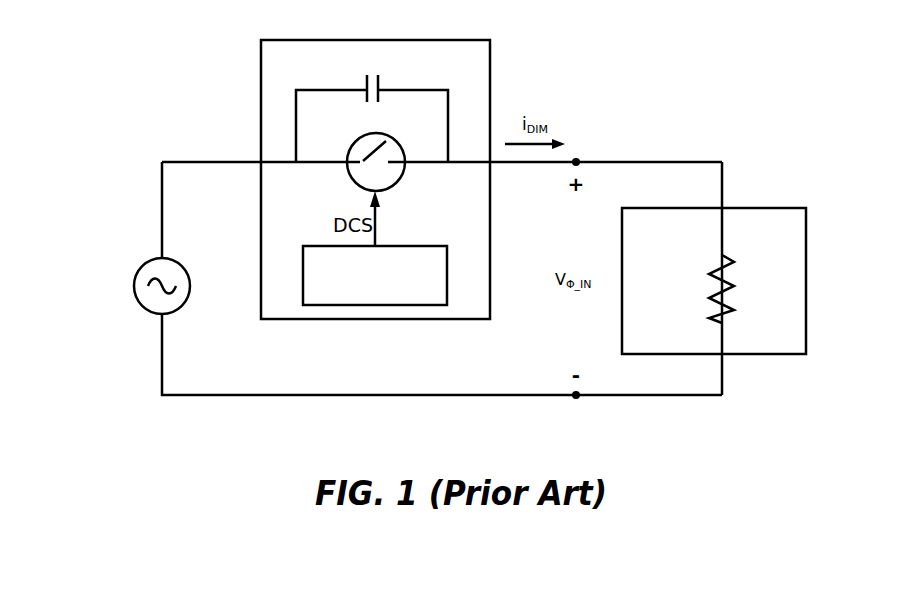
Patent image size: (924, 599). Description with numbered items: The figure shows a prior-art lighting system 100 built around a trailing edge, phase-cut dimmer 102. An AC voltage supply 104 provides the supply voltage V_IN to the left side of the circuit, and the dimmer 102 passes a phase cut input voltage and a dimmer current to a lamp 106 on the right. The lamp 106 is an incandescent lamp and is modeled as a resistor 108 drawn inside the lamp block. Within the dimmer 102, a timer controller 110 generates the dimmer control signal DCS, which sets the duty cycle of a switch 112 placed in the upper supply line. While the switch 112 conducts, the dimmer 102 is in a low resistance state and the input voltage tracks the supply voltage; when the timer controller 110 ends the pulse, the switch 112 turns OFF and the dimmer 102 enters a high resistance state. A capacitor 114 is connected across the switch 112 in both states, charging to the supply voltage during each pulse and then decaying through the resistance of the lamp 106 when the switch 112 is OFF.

The lighting system 100 is at (861, 156).
The trailing edge, phase-cut dimmer 102 is at (490, 100).
The voltage supply 104 is at (142, 308).
The lamp 106 is at (668, 301).
The resistor 108 is at (735, 303).
The timer controller 110 is at (410, 246).
The switch 112 is at (353, 185).
The capacitor 114 is at (383, 80).